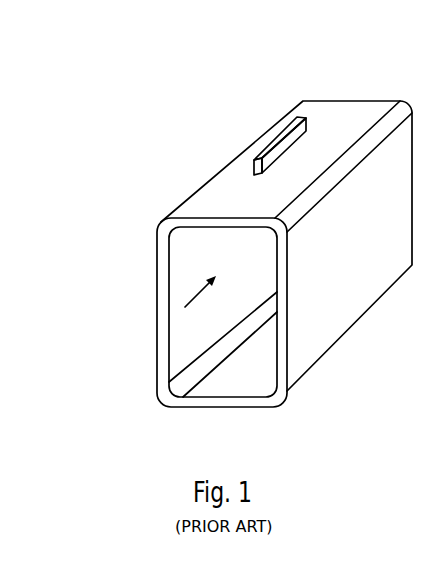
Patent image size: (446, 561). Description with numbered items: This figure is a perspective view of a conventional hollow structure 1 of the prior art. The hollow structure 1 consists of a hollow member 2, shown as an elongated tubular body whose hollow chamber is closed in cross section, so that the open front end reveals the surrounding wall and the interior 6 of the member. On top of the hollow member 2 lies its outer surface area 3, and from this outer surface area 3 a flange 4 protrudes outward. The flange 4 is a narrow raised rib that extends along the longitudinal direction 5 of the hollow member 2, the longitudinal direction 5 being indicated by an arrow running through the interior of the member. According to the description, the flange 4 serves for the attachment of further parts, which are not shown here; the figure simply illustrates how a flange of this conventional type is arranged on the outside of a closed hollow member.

The hollow structure 1 is at (198, 53).
The hollow member 2 is at (207, 205).
The outer surface area 3 is at (237, 186).
The flange 4 is at (290, 138).
The longitudinal direction 5 is at (190, 302).
The interior cavity 6 is at (258, 270).